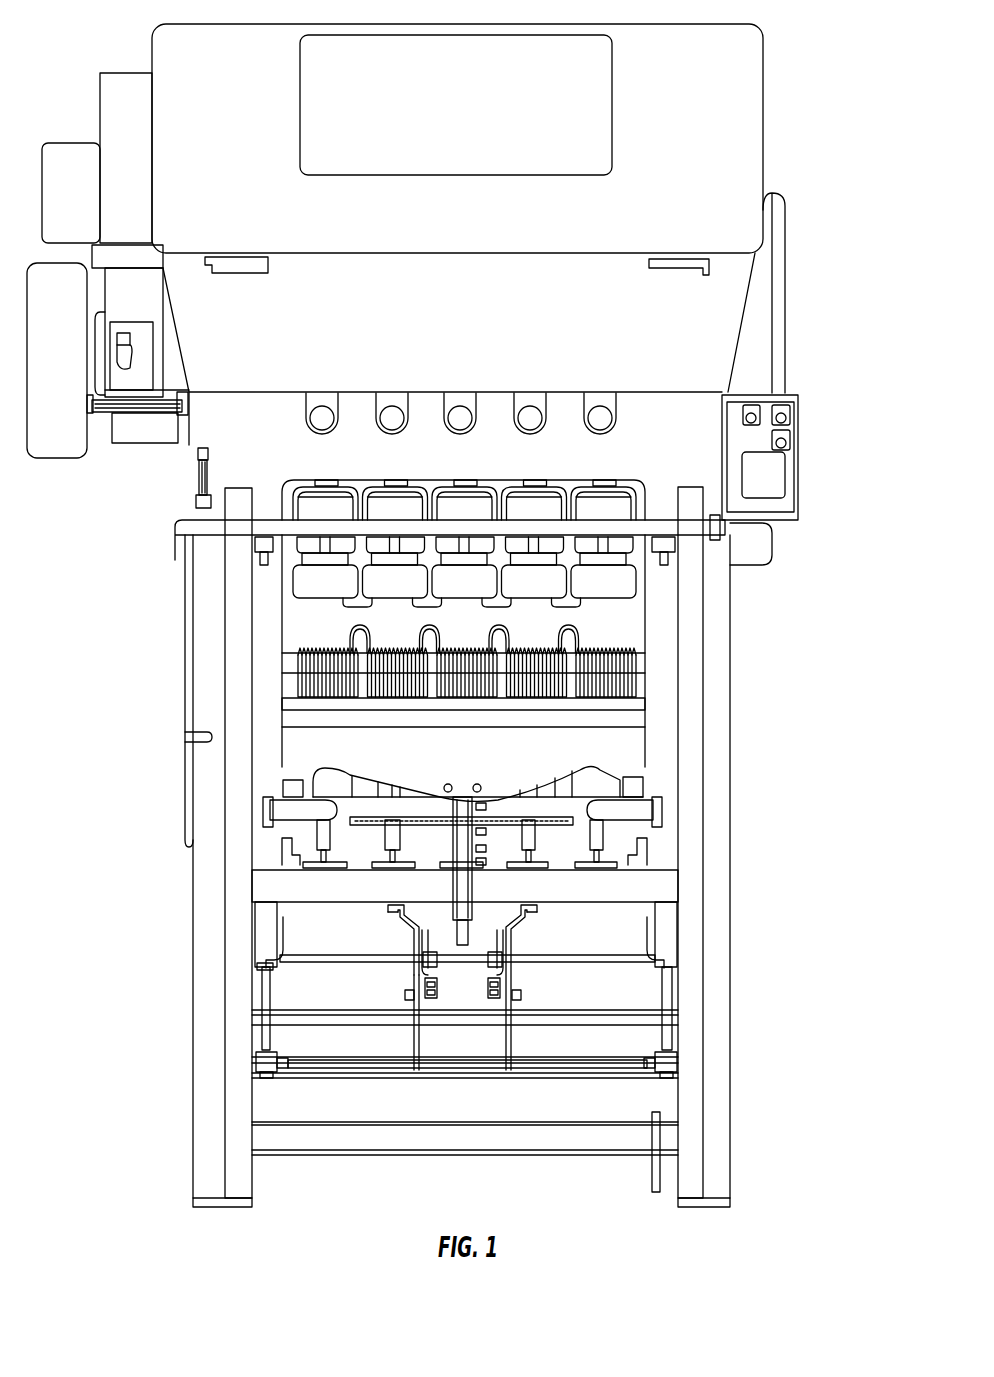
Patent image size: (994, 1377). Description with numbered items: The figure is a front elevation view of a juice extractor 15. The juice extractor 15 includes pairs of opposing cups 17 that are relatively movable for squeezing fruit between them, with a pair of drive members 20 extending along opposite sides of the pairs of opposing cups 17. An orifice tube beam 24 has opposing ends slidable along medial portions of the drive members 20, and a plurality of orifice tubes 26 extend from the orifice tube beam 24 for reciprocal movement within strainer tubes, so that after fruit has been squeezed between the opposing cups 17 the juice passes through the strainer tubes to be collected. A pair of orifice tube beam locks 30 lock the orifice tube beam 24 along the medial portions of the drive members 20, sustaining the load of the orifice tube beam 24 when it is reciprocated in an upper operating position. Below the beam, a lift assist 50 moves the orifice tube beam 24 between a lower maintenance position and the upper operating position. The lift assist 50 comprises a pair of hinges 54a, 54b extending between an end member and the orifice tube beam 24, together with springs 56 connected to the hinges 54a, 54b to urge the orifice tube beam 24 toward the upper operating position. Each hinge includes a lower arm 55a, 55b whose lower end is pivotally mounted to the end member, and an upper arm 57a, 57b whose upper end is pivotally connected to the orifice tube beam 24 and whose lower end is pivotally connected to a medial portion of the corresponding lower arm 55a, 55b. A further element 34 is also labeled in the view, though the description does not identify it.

The juice extractor 15 is at (806, 290).
The opposing cups 17 is at (327, 653).
The orifice tubes 26 is at (313, 783).
The orifice tube beam 24 is at (658, 882).
The orifice tube beam locks 30 is at (248, 962).
The drive members 20 is at (410, 958).
The hanger bracket 34 is at (412, 928).
The upper arm 57a is at (256, 935).
The upper arm 57b is at (524, 1002).
The lift assist 50 is at (403, 996).
The hinge 54a is at (262, 1012).
The hinge 54b is at (513, 942).
The lower arm 55a is at (418, 1043).
The lower arm 55b is at (511, 1042).
The springs 56 is at (497, 932).